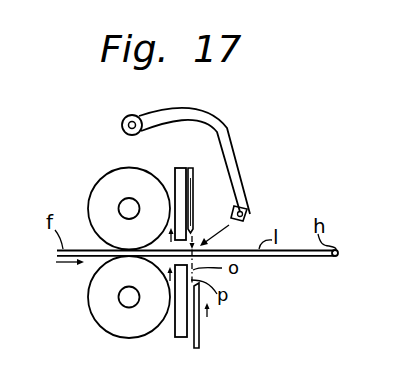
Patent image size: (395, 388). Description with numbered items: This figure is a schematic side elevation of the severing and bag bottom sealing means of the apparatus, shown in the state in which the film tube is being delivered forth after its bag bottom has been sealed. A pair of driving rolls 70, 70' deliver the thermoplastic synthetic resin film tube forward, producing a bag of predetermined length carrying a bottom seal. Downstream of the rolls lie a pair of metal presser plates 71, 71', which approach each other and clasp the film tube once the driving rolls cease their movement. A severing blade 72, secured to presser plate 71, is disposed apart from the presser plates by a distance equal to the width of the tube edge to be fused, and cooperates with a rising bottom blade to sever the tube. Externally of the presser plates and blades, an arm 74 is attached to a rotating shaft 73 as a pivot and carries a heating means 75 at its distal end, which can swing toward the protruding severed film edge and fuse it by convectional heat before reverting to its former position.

The driving roll 70 is at (113, 208).
The driving roll 70' is at (109, 297).
The presser plate 71 is at (162, 194).
The presser plate 71' is at (163, 314).
The severing blade 72 is at (190, 168).
The rotating shaft 73 is at (122, 124).
The arm 74 is at (232, 134).
The heating means 75 is at (231, 217).